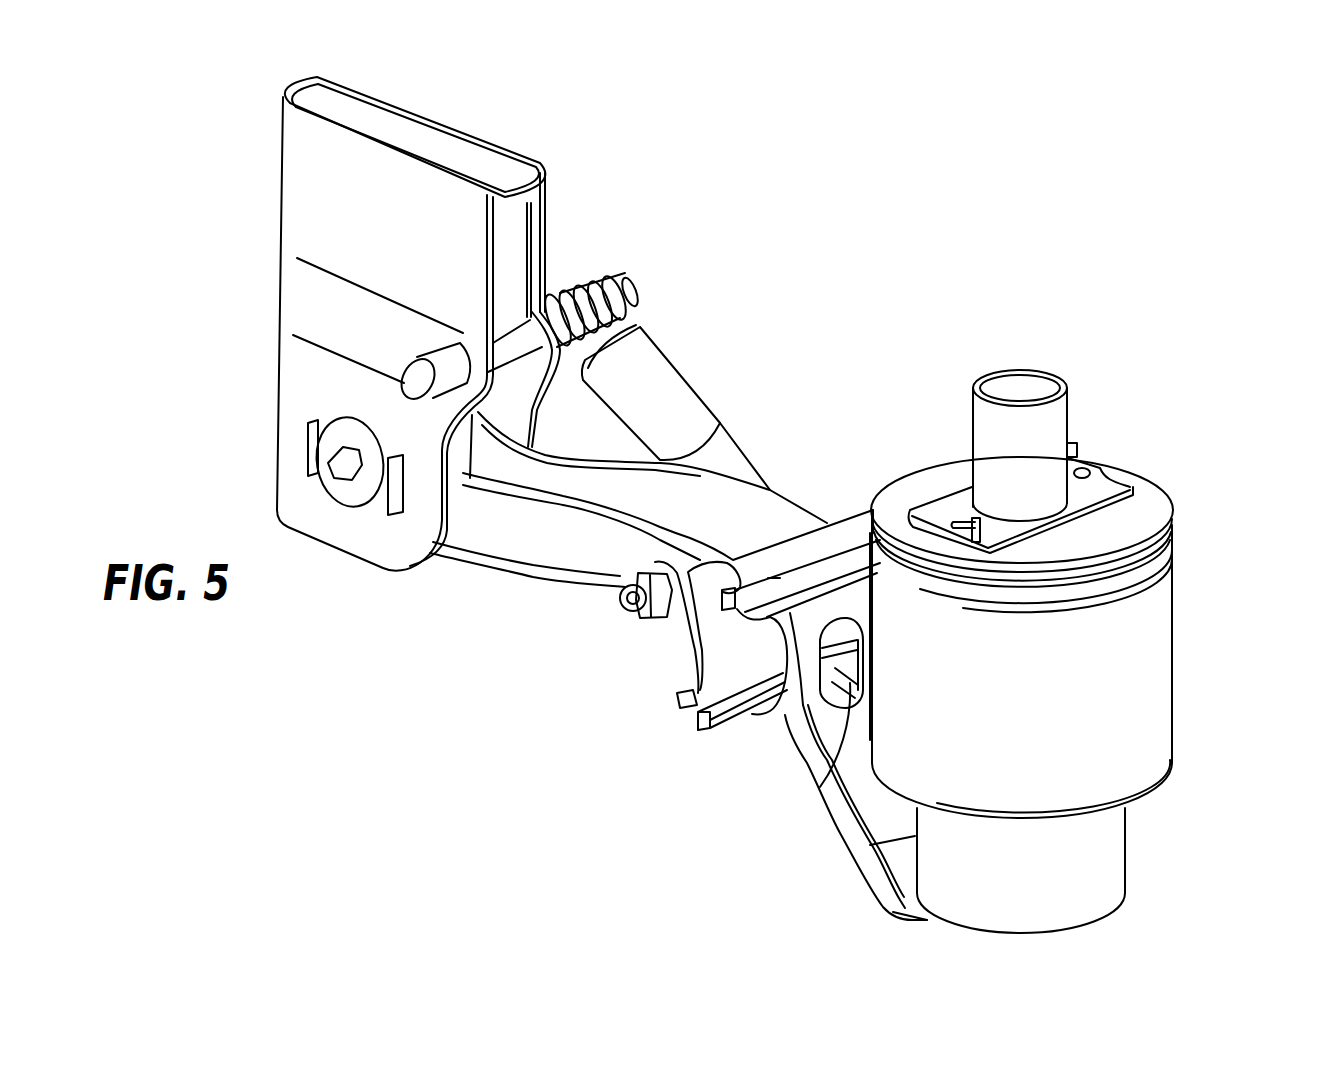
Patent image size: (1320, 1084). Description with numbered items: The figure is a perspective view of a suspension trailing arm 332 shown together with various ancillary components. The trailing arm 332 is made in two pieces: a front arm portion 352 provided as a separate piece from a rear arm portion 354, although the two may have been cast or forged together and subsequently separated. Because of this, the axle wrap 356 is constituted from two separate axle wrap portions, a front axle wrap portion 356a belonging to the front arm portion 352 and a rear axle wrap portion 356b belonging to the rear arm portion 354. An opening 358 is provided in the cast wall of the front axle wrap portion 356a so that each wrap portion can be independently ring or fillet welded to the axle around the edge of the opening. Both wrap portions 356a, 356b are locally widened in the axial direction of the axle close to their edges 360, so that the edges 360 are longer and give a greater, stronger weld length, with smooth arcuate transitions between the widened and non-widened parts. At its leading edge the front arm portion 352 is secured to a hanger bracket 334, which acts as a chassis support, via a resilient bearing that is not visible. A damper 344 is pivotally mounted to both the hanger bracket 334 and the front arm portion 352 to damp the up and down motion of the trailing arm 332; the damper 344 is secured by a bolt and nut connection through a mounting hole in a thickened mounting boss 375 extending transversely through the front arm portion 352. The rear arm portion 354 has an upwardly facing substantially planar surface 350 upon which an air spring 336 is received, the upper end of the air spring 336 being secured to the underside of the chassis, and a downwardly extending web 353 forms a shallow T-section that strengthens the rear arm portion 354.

The trailing arm 332 is at (560, 619).
The hanger bracket 334 is at (477, 138).
The air spring 336 is at (1175, 707).
The damper 344 is at (687, 374).
The substantially planar surface 350 is at (910, 860).
The front arm portion 352 is at (470, 567).
The downwardly extending web 353 is at (870, 893).
The rear arm portion 354 is at (873, 812).
The axle wrap 356 is at (756, 585).
The front axle wrap portion 356a is at (860, 510).
The rear axle wrap portion 356b is at (703, 727).
The opening 358 is at (820, 788).
The edges 360 is at (774, 578).
The mounting boss 375 is at (663, 613).